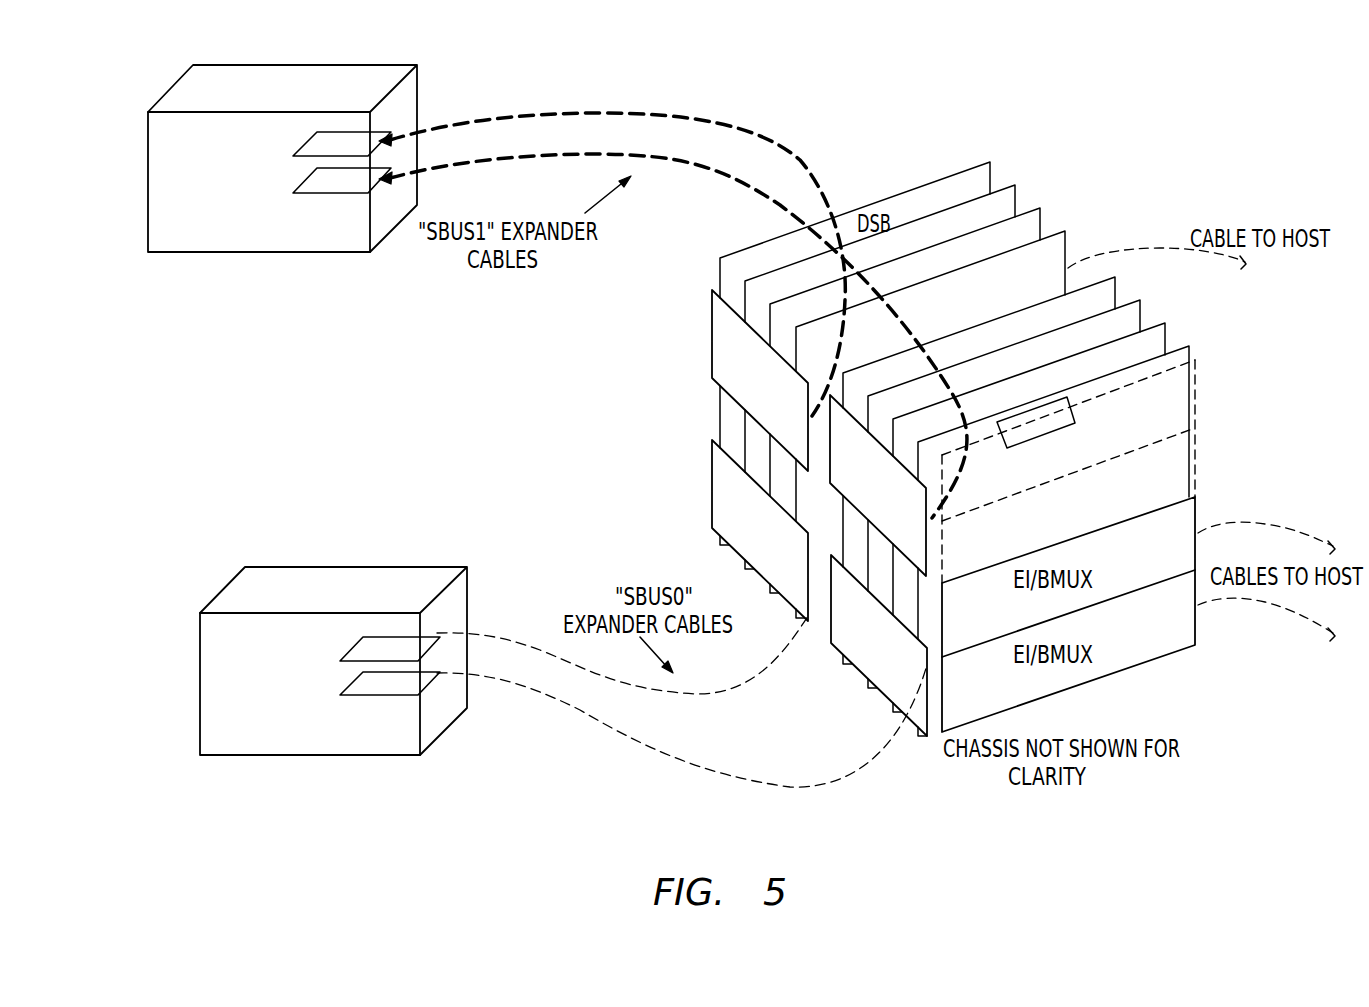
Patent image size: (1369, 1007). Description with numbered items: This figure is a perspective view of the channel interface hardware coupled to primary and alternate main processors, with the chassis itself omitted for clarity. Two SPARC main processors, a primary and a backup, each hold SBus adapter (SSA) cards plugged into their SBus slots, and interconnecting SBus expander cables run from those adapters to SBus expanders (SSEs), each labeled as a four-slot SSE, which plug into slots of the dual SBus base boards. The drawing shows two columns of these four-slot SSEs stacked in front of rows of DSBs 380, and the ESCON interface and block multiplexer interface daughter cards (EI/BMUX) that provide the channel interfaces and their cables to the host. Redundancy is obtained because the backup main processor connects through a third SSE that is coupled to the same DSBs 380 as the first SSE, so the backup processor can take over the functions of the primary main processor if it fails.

The dual SBus base boards 380 is at (1098, 302).